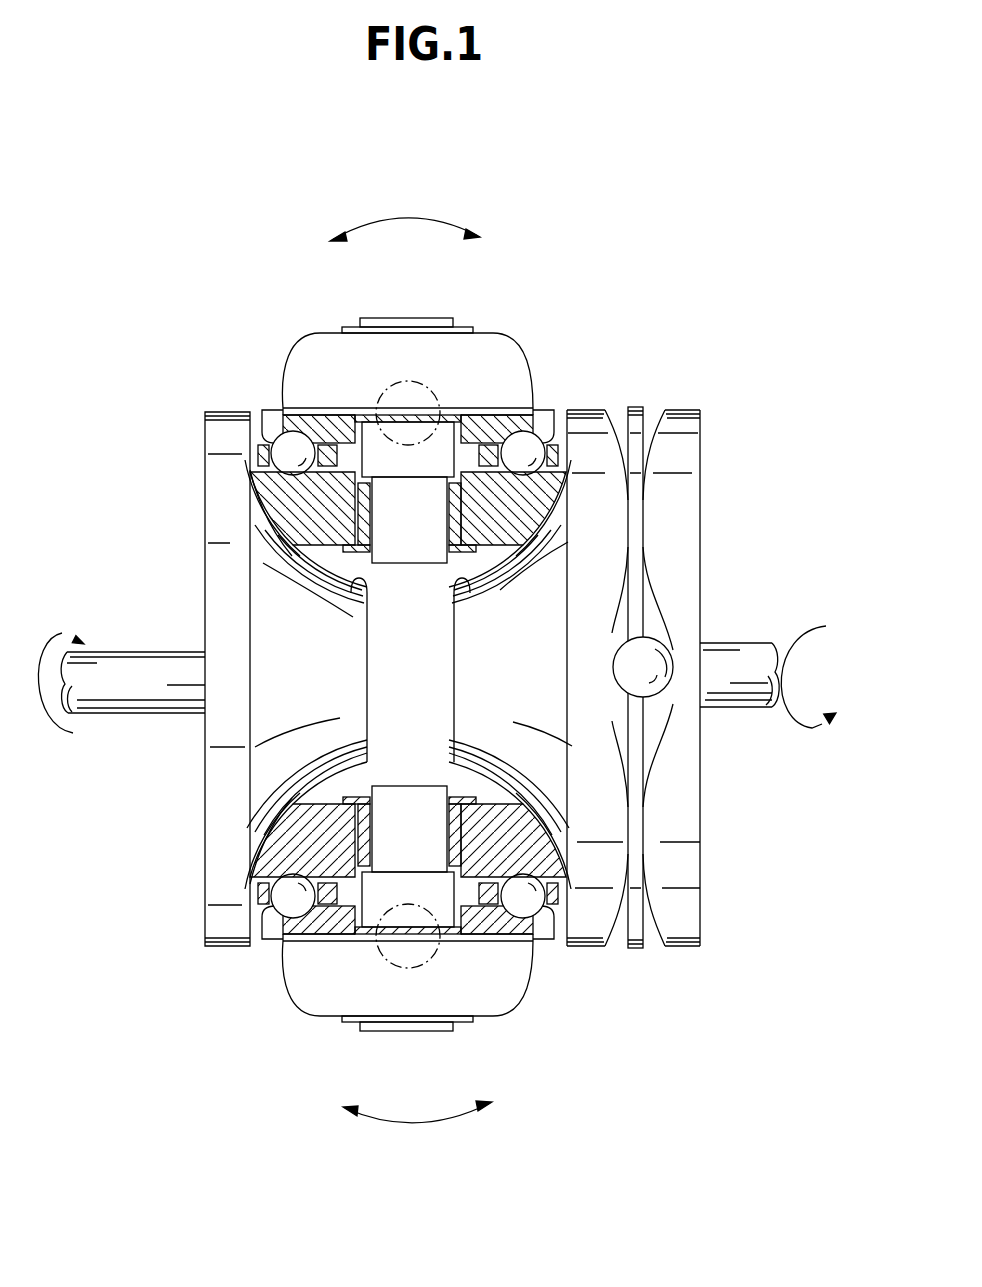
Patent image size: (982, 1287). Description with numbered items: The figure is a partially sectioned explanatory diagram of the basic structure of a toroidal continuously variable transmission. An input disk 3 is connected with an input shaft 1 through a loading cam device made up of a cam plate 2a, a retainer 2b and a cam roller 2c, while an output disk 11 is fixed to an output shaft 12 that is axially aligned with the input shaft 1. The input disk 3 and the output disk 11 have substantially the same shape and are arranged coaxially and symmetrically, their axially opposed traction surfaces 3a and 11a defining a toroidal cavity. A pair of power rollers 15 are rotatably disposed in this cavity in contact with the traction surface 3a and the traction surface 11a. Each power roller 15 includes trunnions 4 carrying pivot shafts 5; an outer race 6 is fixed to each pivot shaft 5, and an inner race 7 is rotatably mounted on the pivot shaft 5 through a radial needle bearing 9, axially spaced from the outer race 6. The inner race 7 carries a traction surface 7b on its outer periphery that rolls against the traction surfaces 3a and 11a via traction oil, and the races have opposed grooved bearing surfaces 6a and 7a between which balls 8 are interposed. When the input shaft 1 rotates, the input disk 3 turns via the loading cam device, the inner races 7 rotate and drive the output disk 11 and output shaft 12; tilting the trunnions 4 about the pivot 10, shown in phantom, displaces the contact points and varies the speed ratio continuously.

The input shaft 1 is at (757, 643).
The cam plate 2a is at (680, 410).
The retainer 2b is at (635, 410).
The cam roller 2c is at (658, 632).
The input disk 3 is at (593, 410).
The traction surface of input disk 3a is at (462, 578).
The trunnion 4 is at (498, 333).
The pivot shaft 5 is at (437, 317).
The outer race 6 is at (543, 427).
The bearing surface of outer race 6a is at (293, 437).
The inner race 7 is at (555, 467).
The bearing surface of inner race 7a is at (268, 428).
The traction surface of inner race 7b is at (290, 537).
The balls 8 is at (280, 443).
The radial needle bearing 9 is at (345, 470).
The pivot 10 is at (392, 383).
The output disk 11 is at (205, 412).
The traction surface of output disk 11a is at (380, 580).
The output shaft 12 is at (136, 652).
The power roller 15 is at (528, 284).